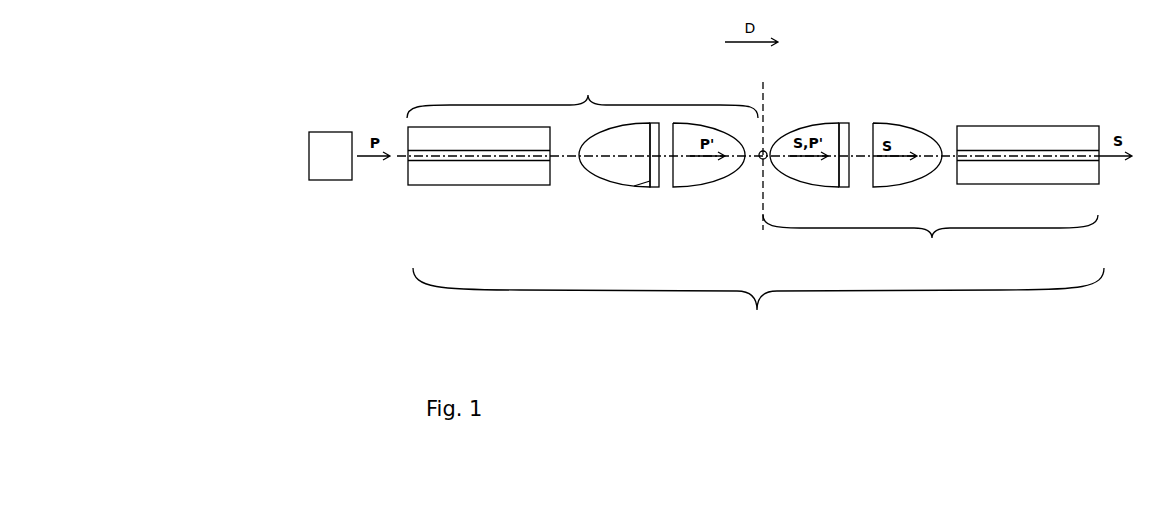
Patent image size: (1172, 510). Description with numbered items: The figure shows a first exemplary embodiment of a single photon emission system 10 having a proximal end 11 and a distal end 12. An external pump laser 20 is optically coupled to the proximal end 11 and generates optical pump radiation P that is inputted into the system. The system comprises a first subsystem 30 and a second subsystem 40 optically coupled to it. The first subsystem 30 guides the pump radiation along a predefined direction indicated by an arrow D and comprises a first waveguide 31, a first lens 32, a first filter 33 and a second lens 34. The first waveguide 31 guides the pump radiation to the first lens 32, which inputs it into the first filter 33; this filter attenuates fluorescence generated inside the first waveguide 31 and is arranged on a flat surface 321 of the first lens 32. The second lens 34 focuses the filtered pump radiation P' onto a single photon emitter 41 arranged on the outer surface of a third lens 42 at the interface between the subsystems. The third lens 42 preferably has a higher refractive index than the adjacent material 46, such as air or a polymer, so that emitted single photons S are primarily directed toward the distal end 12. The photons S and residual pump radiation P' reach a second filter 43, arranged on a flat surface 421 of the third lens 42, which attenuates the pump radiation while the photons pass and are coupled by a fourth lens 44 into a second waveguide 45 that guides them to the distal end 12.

The single photon emission system 10 is at (758, 302).
The proximal end 11 is at (408, 152).
The distal end 12 is at (1100, 150).
The external pump laser 20 is at (330, 156).
The first subsystem 30 is at (582, 97).
The first waveguide 31 is at (460, 175).
The first lens 32 is at (613, 167).
The flat surface 321 is at (636, 185).
The first filter 33 is at (655, 183).
The second lens 34 is at (688, 178).
The second subsystem 40 is at (930, 239).
The single photon emitter 41 is at (760, 160).
The third lens 42 is at (820, 173).
The flat surface 421 is at (831, 126).
The second filter 43 is at (848, 124).
The fourth lens 44 is at (913, 137).
The second waveguide 45 is at (1061, 137).
The adjacent material 46 is at (773, 133).